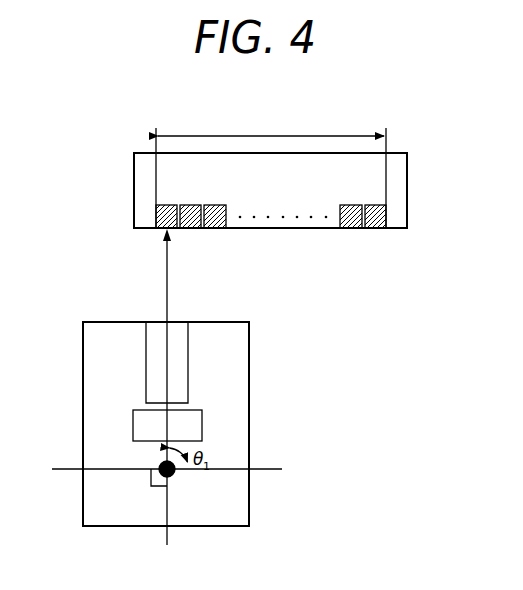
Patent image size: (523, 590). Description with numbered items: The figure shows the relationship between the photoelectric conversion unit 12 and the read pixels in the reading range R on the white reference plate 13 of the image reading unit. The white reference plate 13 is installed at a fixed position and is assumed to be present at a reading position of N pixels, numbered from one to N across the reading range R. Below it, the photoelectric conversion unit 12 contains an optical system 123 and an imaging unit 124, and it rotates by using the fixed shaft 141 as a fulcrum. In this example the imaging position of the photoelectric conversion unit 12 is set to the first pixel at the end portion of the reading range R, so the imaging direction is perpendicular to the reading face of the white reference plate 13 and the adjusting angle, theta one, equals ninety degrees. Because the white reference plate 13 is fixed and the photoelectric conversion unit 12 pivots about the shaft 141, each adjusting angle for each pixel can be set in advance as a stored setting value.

The white reference plate 13 is at (407, 179).
The photoelectric conversion unit 12 is at (249, 425).
The optical system 123 is at (178, 357).
The imaging unit 124 is at (197, 420).
The shaft 141 is at (162, 466).